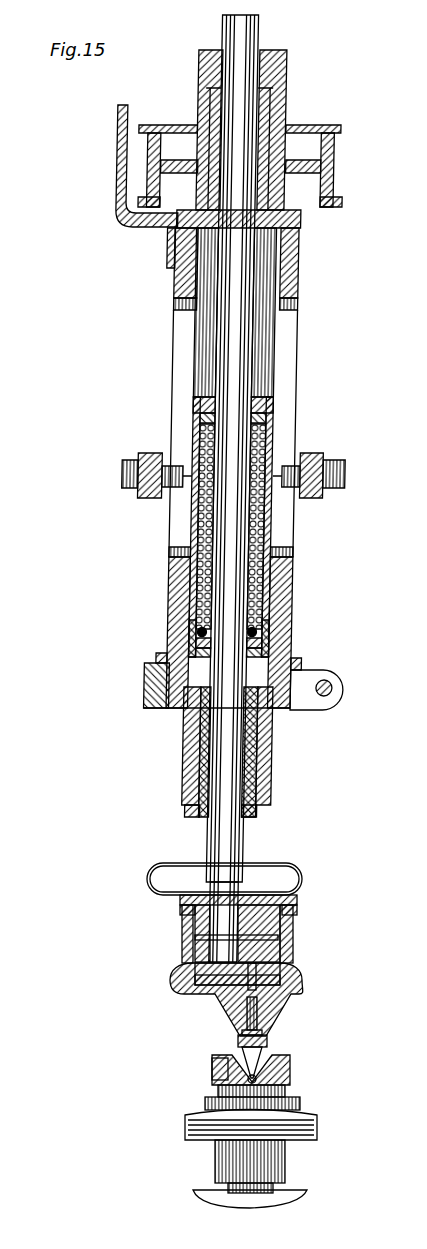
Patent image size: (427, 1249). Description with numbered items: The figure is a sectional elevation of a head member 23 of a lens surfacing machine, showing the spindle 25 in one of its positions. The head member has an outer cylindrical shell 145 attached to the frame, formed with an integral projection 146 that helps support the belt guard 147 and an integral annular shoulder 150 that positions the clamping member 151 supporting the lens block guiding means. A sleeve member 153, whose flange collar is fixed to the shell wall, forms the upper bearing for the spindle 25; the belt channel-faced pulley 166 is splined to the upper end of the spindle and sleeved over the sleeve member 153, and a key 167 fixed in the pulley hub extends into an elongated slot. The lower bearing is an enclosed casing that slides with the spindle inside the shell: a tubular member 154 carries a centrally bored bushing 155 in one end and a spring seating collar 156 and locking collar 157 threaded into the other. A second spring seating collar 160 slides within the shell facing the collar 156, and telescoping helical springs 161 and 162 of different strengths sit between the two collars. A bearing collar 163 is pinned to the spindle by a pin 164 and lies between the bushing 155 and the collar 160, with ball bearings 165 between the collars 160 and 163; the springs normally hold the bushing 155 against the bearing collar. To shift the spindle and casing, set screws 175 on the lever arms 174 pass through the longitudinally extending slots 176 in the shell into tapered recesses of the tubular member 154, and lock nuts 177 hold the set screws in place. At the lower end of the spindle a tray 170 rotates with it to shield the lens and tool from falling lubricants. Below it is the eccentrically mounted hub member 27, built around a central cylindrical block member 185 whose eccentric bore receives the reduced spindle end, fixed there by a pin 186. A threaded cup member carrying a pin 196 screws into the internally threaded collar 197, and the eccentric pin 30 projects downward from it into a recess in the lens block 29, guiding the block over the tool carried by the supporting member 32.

The spindle 25 is at (216, 830).
The key 167 is at (222, 58).
The sleeve member 153 is at (267, 115).
The belt channel-faced pulley 166 is at (330, 165).
The belt guard 147 is at (117, 190).
The outer cylindrical shell 145 is at (292, 265).
The integral projection 146 is at (172, 270).
The longitudinally extending slots 176 is at (178, 318).
The locking collar 157 is at (272, 396).
The spring seating collar 156 is at (272, 412).
The helical spring 161 is at (260, 535).
The helical spring 162 is at (262, 553).
The lever arm 174 is at (150, 441).
The set screw 175 is at (122, 472).
The lock nut 177 is at (140, 494).
The head member 23 is at (168, 590).
The ball bearings 165 is at (196, 632).
The spring seating collar 160 is at (262, 632).
The bearing collar 163 is at (262, 642).
The pin 164 is at (262, 650).
The integral annular shoulder 150 is at (160, 658).
The clamping member 151 is at (143, 682).
The tubular member 154 is at (190, 733).
The bushing 155 is at (250, 782).
The tray 170 is at (298, 873).
The internally threaded collar 197 is at (295, 900).
The central cylindrical block member 185 is at (295, 925).
The hub member 27 is at (293, 950).
The pin 186 is at (200, 937).
The pin 196 is at (282, 965).
The pin member 30 is at (262, 1050).
The lens block 29 is at (290, 1060).
The tool supporting member 32 is at (273, 1190).